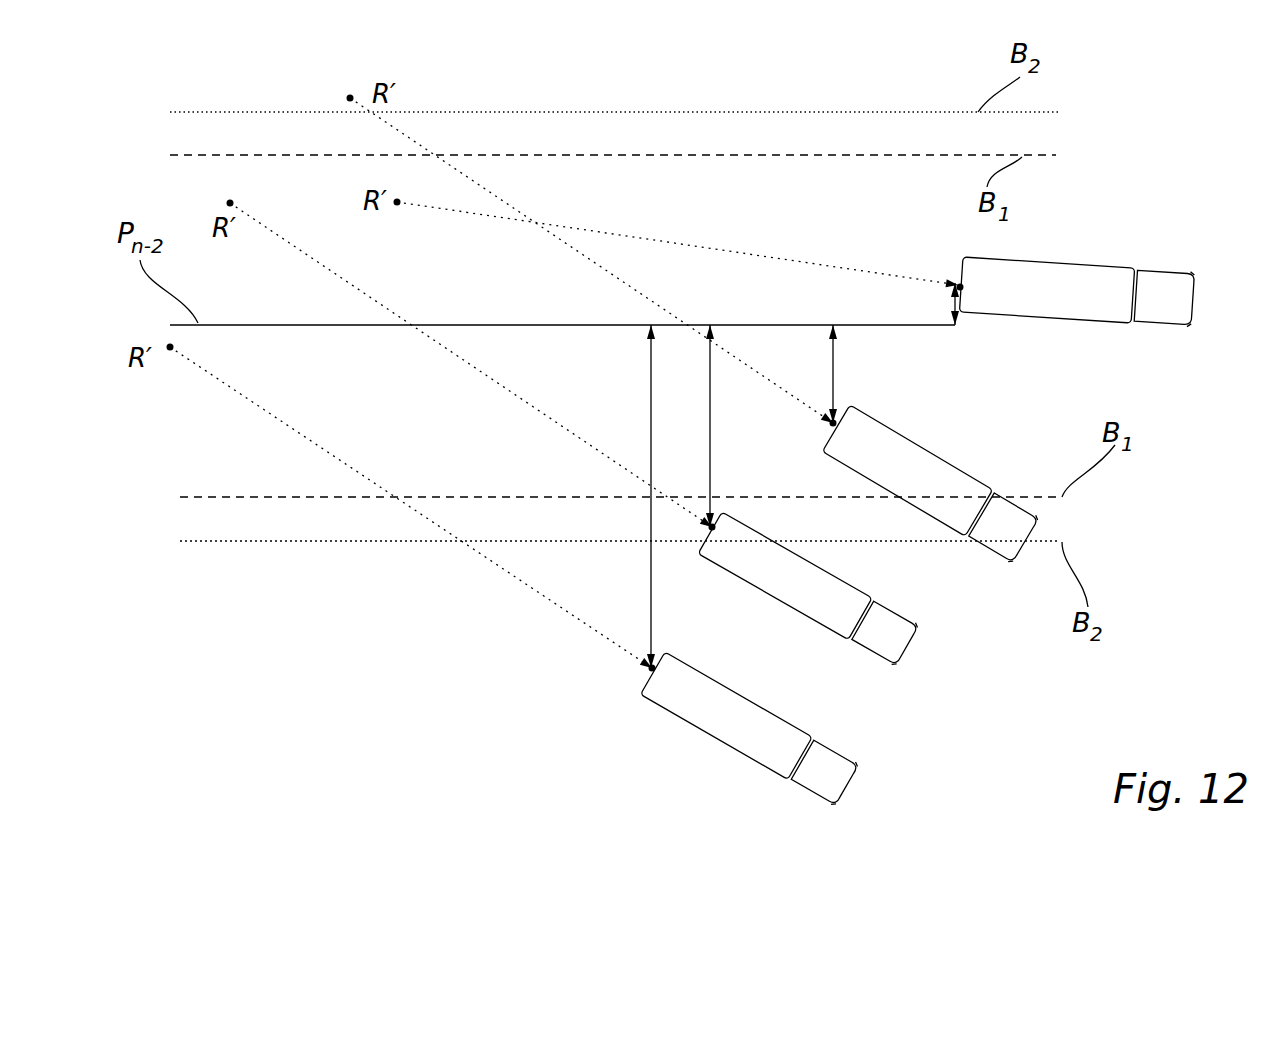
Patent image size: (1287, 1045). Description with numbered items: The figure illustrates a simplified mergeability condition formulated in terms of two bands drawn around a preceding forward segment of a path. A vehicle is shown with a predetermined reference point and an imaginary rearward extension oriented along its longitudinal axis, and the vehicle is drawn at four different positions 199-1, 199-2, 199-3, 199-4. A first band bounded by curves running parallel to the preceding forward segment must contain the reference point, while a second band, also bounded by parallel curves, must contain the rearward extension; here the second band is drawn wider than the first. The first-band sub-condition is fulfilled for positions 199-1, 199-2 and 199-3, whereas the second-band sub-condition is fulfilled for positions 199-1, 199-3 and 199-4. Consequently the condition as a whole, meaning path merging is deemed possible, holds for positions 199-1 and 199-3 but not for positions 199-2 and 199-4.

The vehicle position 199-1 is at (1110, 267).
The vehicle position 199-2 is at (950, 462).
The vehicle position 199-3 is at (918, 648).
The vehicle position 199-4 is at (730, 747).